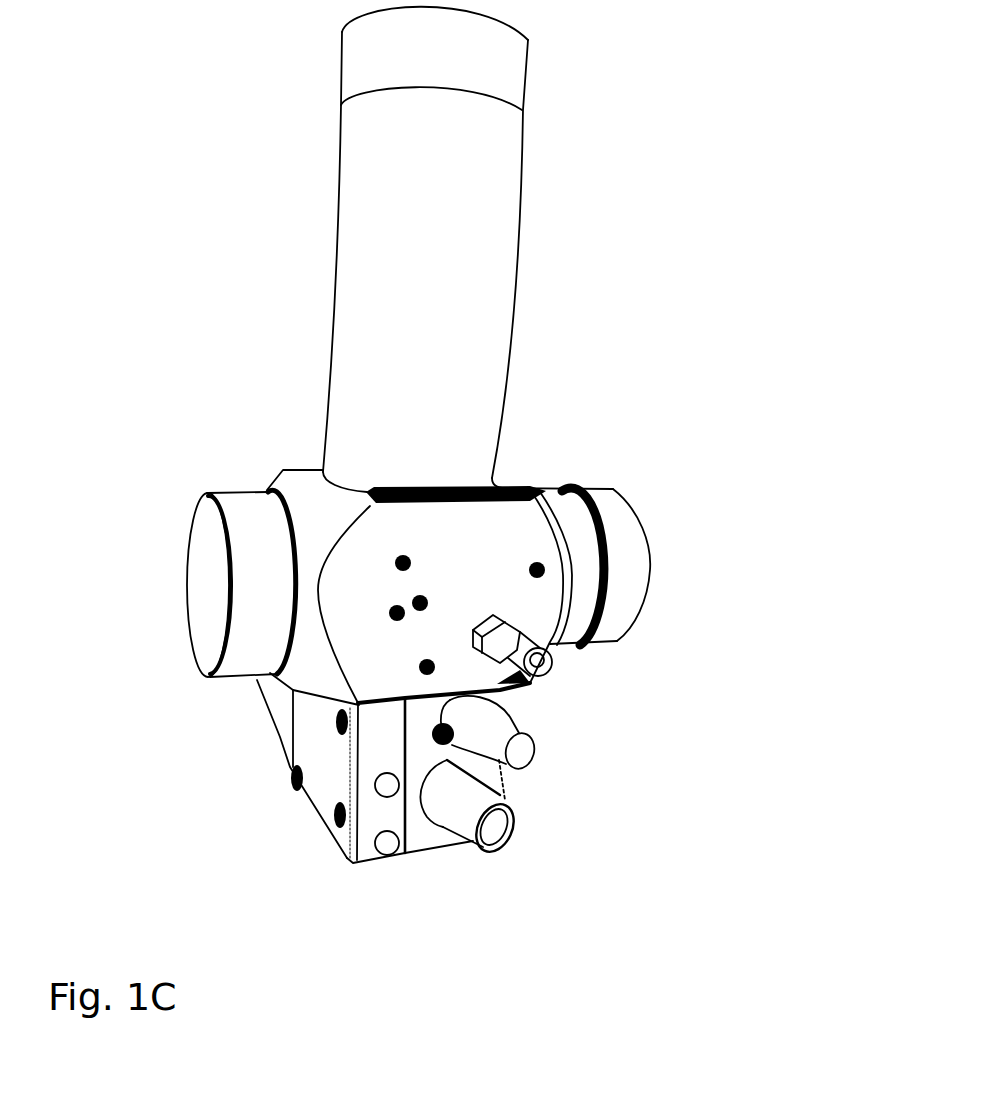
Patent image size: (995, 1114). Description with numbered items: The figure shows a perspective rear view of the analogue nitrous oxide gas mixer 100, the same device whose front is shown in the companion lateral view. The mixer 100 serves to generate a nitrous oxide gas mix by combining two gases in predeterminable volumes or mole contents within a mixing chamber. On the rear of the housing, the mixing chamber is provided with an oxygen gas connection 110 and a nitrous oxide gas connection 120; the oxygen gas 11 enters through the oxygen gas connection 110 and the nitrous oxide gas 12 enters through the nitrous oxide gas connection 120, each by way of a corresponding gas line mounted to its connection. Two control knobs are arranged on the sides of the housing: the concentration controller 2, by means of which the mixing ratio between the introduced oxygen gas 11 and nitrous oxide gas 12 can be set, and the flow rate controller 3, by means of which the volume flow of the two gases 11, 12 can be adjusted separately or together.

The nitrous oxide gas mixer 100 is at (476, 451).
The concentration controller 2 is at (632, 572).
The flow rate controller 3 is at (207, 567).
The oxygen gas 11 is at (539, 827).
The oxygen gas connection 110 is at (500, 830).
The nitrous oxide gas 12 is at (559, 753).
The nitrous oxide gas connection 120 is at (527, 751).